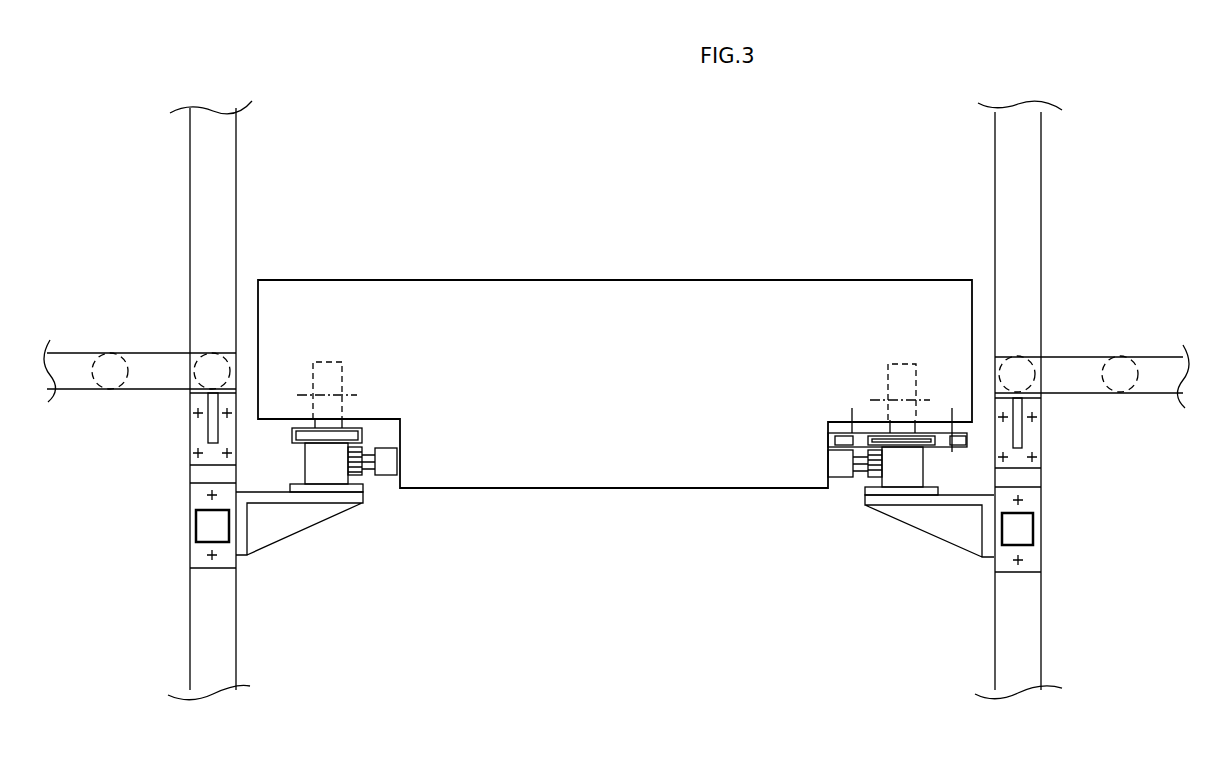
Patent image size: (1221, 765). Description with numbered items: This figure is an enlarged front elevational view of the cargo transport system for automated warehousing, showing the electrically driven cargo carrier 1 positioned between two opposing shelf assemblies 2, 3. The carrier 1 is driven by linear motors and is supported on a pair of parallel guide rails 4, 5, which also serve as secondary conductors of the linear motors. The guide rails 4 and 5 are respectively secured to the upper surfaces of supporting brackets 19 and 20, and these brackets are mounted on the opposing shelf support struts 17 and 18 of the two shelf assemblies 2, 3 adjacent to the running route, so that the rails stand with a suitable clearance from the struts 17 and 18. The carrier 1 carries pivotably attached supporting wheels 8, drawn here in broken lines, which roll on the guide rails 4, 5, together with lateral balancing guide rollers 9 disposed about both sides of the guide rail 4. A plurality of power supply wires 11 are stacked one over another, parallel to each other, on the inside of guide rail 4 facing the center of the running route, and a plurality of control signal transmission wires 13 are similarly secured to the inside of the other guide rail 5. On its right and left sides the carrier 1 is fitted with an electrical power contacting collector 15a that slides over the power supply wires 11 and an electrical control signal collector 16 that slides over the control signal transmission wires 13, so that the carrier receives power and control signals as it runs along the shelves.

The electrically driven cargo carrier 1 is at (635, 320).
The shelf assembly 2 is at (990, 208).
The shelf assembly 3 is at (246, 173).
The guide rail 4 is at (910, 472).
The guide rail 5 is at (323, 465).
The supporting wheel 8 is at (346, 373).
The lateral balancing guide roller 9 is at (947, 438).
The power supply wire 11 is at (880, 458).
The control signal transmission wire 13 is at (362, 448).
The electrical power contacting collector 15a is at (838, 467).
The electrical control signal collector 16 is at (387, 462).
The shelf support strut 17 is at (1012, 247).
The shelf support strut 18 is at (218, 233).
The supporting bracket 19 is at (950, 528).
The supporting bracket 20 is at (267, 530).